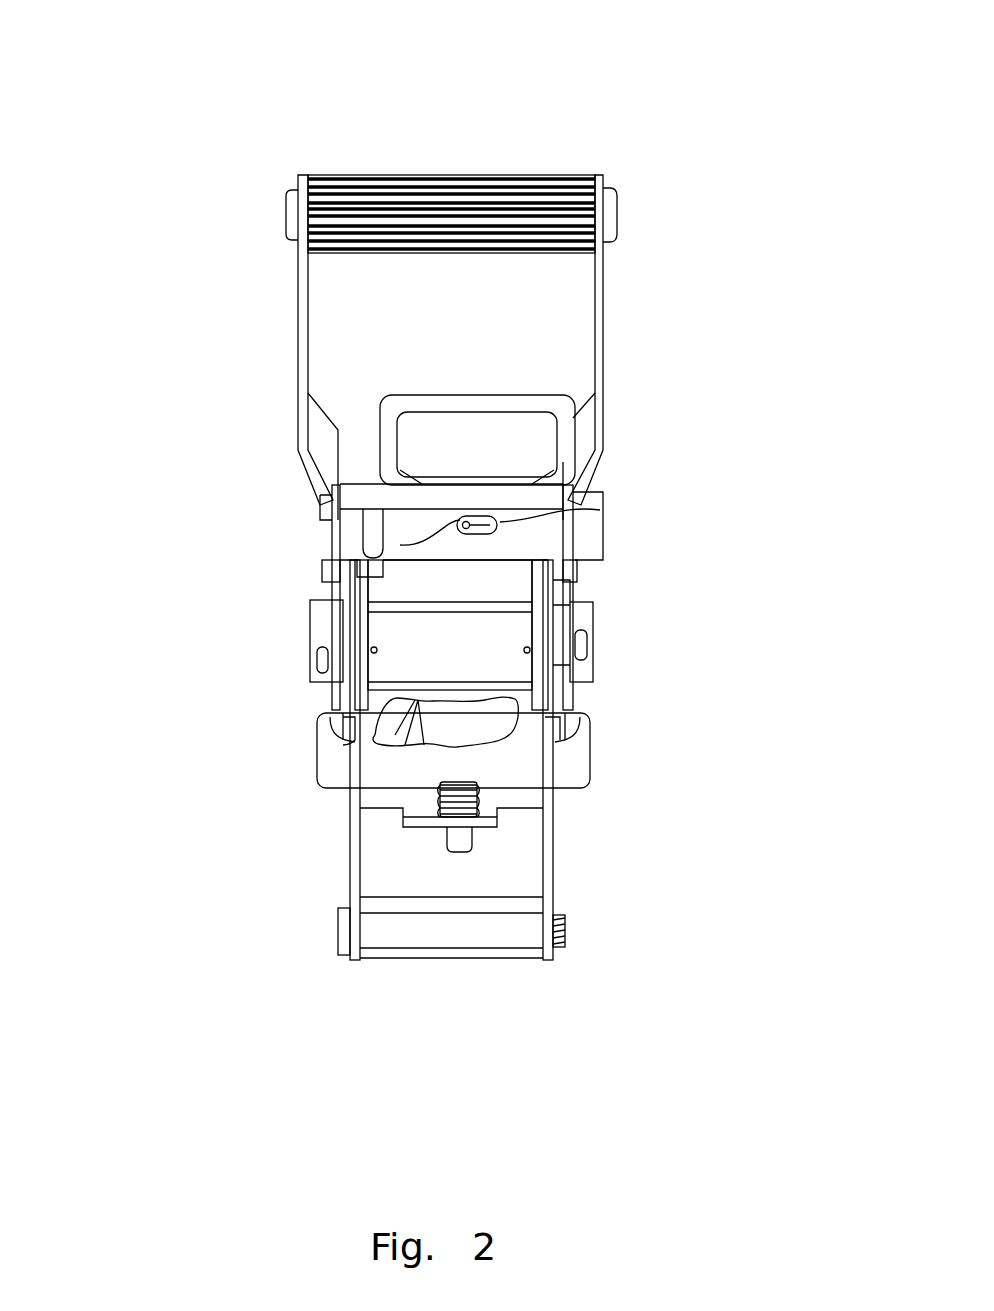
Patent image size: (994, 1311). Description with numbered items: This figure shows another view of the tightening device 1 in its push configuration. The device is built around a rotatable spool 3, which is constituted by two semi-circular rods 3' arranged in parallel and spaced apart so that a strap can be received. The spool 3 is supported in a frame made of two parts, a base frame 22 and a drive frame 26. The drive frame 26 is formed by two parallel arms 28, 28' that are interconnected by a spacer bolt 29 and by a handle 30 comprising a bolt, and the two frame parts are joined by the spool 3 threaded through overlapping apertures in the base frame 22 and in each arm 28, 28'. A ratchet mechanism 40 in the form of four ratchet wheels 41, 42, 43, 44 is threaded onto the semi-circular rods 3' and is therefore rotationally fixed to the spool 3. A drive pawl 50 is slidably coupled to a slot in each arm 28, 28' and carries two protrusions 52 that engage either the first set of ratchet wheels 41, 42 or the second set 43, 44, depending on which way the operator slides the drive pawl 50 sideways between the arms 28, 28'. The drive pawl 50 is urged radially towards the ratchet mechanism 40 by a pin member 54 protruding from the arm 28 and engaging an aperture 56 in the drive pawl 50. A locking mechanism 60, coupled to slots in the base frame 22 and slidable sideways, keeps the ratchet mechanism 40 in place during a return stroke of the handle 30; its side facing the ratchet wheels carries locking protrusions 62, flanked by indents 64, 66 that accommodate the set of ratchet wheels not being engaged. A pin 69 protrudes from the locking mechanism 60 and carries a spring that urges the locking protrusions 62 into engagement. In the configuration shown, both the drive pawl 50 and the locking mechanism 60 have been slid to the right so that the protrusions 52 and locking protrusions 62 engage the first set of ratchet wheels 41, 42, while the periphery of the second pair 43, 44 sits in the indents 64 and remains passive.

The tightening device 1 is at (143, 143).
The base frame 22 is at (553, 868).
The drive frame 26 is at (286, 378).
The arm 28 is at (203, 243).
The arm 28' is at (691, 238).
The spacer bolt 29 is at (332, 470).
The handle 30 is at (512, 175).
The rotatable spool 3 is at (216, 632).
The semi-circular rod 3' is at (678, 646).
The ratchet mechanism 40 is at (320, 695).
The ratchet wheel 41 is at (570, 603).
The ratchet wheel 42 is at (372, 662).
The ratchet wheel 43 is at (548, 682).
The ratchet wheel 44 is at (343, 622).
The drive pawl 50 is at (603, 513).
The protrusion 52 is at (338, 562).
The pin member 54 is at (360, 530).
The aperture 56 is at (603, 492).
The locking mechanism 60 is at (590, 743).
The locking protrusion 62 is at (378, 712).
The indent 64 is at (343, 760).
The indent 66 is at (455, 818).
The pin 69 is at (403, 818).